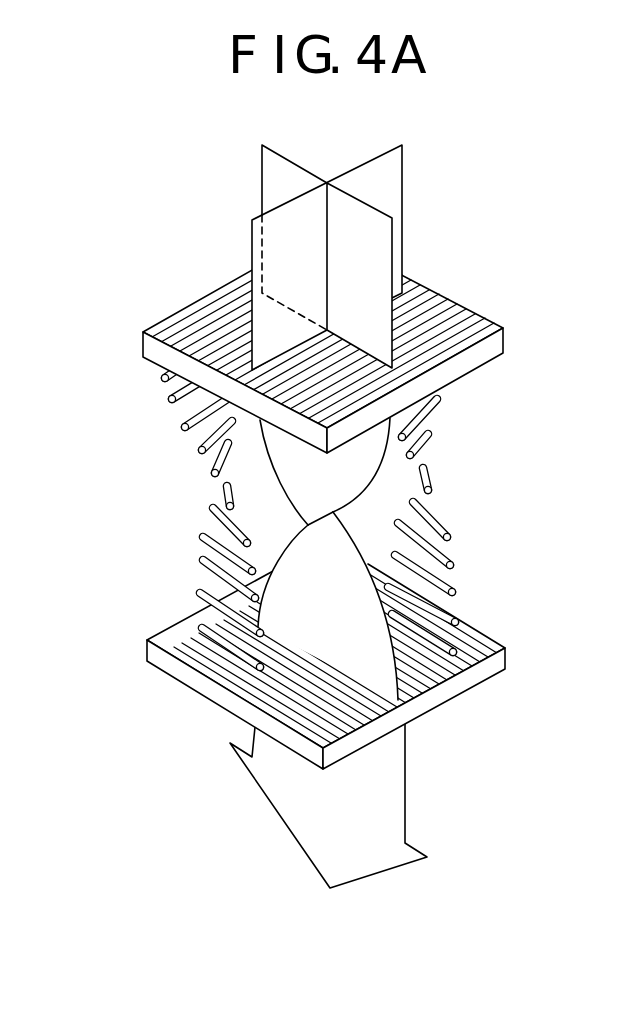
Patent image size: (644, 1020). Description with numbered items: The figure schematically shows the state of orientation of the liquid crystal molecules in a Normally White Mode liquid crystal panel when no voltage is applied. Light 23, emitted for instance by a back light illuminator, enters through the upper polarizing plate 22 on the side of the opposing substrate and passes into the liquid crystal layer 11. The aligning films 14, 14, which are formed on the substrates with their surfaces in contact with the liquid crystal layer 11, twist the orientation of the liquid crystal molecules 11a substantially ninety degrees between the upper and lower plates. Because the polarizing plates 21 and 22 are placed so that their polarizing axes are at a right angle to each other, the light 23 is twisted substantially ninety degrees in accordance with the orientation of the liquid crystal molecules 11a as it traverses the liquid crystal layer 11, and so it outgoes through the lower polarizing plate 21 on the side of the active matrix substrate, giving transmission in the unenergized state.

The liquid crystal layer 11 is at (150, 530).
The liquid crystal molecules 11a is at (440, 527).
The aligning film 14 is at (480, 370).
The polarizing plate 21 is at (447, 702).
The polarizing plate 22 is at (473, 313).
The light 23 is at (393, 173).